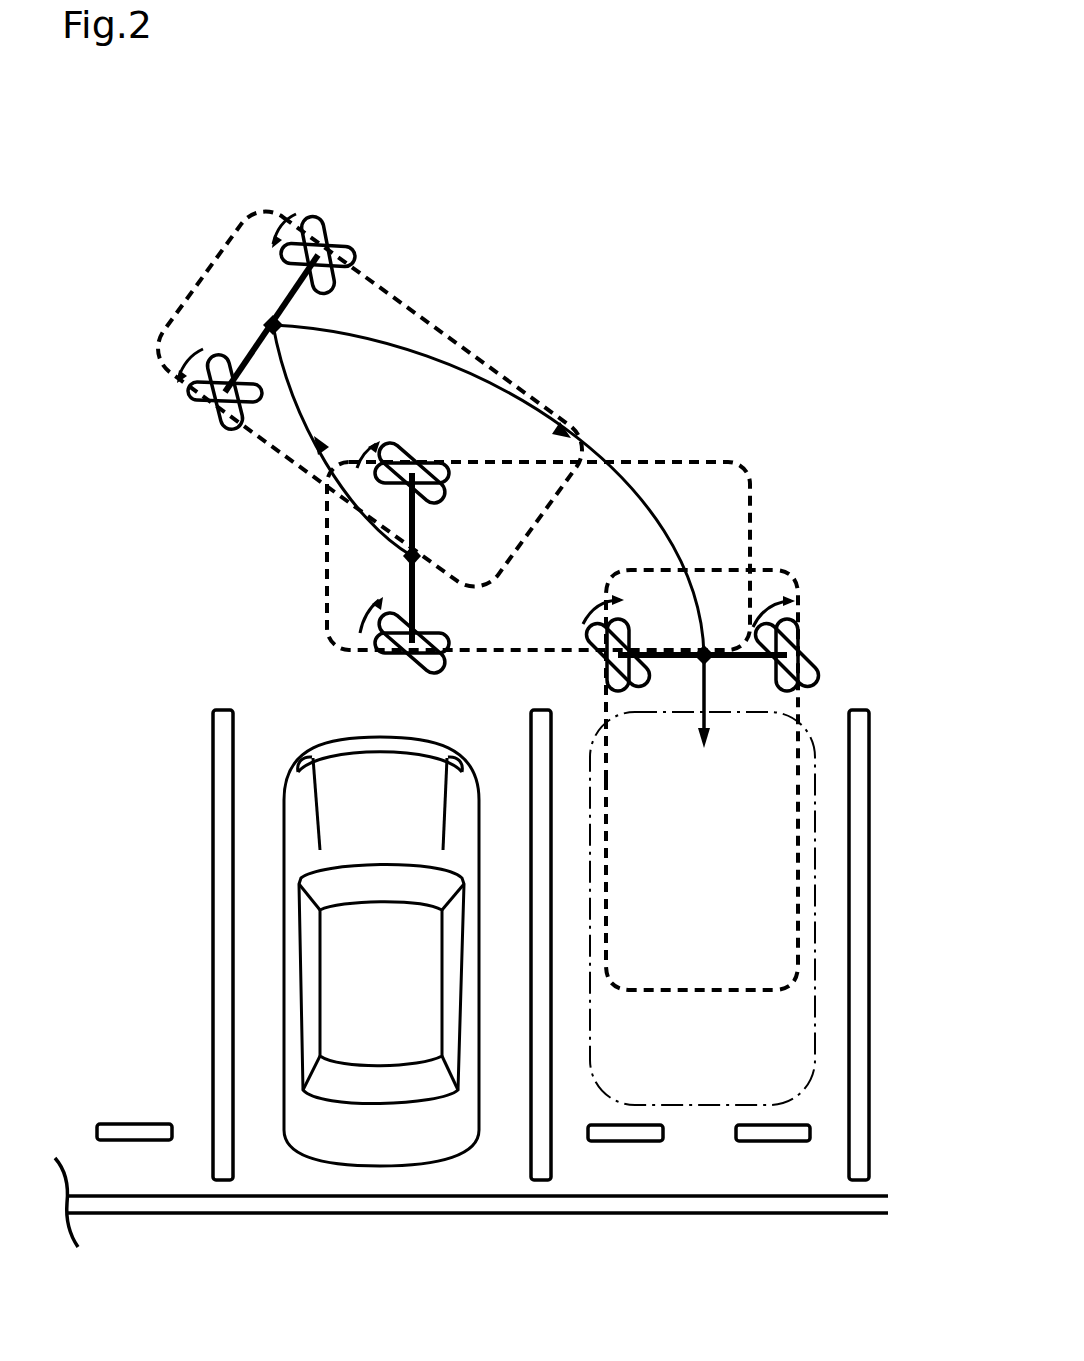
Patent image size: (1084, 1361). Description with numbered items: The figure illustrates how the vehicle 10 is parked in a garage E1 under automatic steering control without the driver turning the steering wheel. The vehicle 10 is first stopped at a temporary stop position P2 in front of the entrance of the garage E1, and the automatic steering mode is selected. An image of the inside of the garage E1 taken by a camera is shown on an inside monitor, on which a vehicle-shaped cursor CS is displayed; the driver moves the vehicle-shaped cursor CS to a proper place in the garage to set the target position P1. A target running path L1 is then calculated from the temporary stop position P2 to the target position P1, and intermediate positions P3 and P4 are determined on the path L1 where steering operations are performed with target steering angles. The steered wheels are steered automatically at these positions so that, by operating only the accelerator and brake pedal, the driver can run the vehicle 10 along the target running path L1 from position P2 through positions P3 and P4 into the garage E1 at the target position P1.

The vehicle 10 is at (357, 194).
The target position P1 is at (811, 953).
The temporary stop position P2 is at (326, 566).
The intermediate position P3 is at (243, 220).
The intermediate position P4 is at (786, 579).
The target running path L1 is at (442, 355).
The garage E1 is at (829, 804).
The vehicle-shaped cursor CS is at (700, 1110).